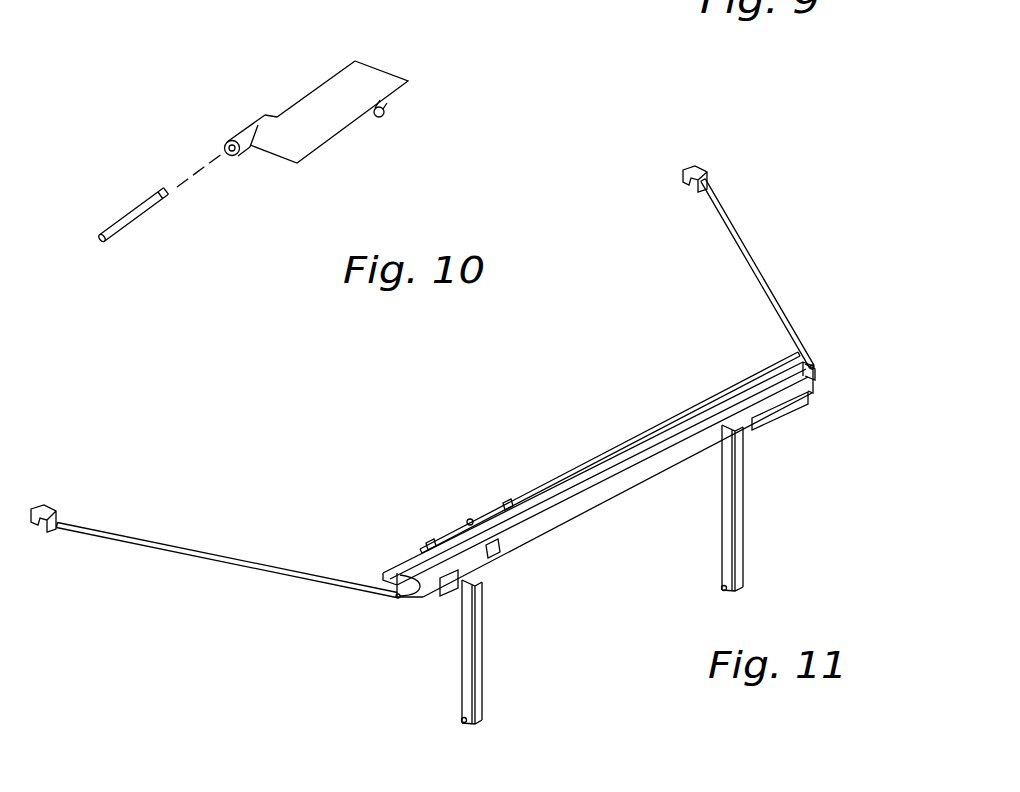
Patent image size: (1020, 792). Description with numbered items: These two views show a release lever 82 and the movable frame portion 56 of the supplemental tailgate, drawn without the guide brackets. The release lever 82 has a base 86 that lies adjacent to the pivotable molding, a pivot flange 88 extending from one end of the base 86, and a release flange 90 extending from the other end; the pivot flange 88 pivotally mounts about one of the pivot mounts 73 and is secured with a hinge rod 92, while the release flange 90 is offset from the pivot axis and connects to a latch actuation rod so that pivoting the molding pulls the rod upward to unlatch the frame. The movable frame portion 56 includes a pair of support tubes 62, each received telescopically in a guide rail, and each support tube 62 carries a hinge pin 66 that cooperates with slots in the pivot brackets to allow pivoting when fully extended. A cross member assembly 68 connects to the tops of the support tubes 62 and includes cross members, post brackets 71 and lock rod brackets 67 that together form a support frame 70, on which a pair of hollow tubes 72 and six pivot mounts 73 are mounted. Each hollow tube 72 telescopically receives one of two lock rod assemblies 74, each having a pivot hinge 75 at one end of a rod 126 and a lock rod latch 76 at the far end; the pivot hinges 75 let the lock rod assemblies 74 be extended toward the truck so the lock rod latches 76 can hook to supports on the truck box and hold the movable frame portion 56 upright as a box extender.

In FIG. 11, the movable frame portion 56 is at (463, 413).
In FIG. 11, the support tubes 62 is at (608, 574).
In FIG. 11, the hinge pin 66 is at (463, 720).
In FIG. 11, the lock rod brackets 67 is at (400, 587).
In FIG. 11, the cross member assembly 68 is at (544, 466).
In FIG. 11, the support frame 70 is at (663, 428).
In FIG. 11, the post brackets 71 is at (493, 552).
In FIG. 11, the hollow tubes 72 is at (445, 583).
In FIG. 11, the pivot mounts 73 is at (507, 503).
In FIG. 11, the lock rod assemblies 74 is at (444, 362).
In FIG. 11, the pivot hinges 75 is at (398, 596).
In FIG. 11, the lock rod latches 76 is at (50, 512).
In FIG. 10, the release lever 82 is at (285, 121).
In FIG. 10, the base 86 is at (338, 136).
In FIG. 10, the pivot flange 88 is at (243, 150).
In FIG. 10, the release flange 90 is at (392, 103).
In FIG. 10, the hinge rod 92 is at (147, 197).
In FIG. 11, the hinge rod 92 is at (467, 518).
In FIG. 11, the rod 126 is at (142, 538).